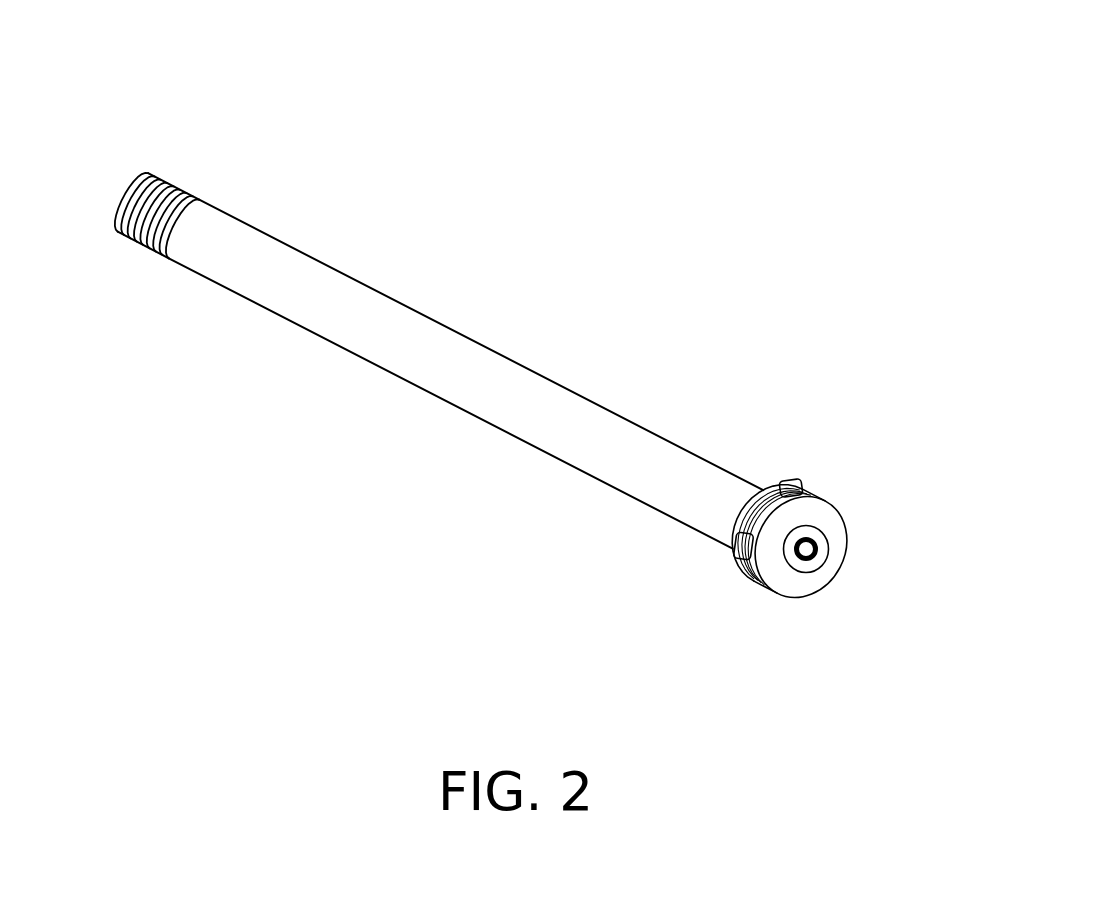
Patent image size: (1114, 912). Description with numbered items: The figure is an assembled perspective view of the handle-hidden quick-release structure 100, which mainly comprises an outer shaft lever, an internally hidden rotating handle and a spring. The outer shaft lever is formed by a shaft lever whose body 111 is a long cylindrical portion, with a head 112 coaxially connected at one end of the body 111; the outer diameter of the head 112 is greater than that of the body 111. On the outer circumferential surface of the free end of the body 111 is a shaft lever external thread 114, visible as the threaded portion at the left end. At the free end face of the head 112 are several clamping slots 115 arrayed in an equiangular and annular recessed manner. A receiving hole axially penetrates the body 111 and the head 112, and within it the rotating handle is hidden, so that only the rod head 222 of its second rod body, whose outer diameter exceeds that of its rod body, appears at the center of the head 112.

The handle-hidden quick-release structure 100 is at (1025, 138).
The body 111 is at (318, 285).
The shaft lever external thread 114 is at (127, 243).
The head 112 is at (748, 588).
The clamping slots 115 is at (791, 486).
The rod head 222 is at (834, 563).